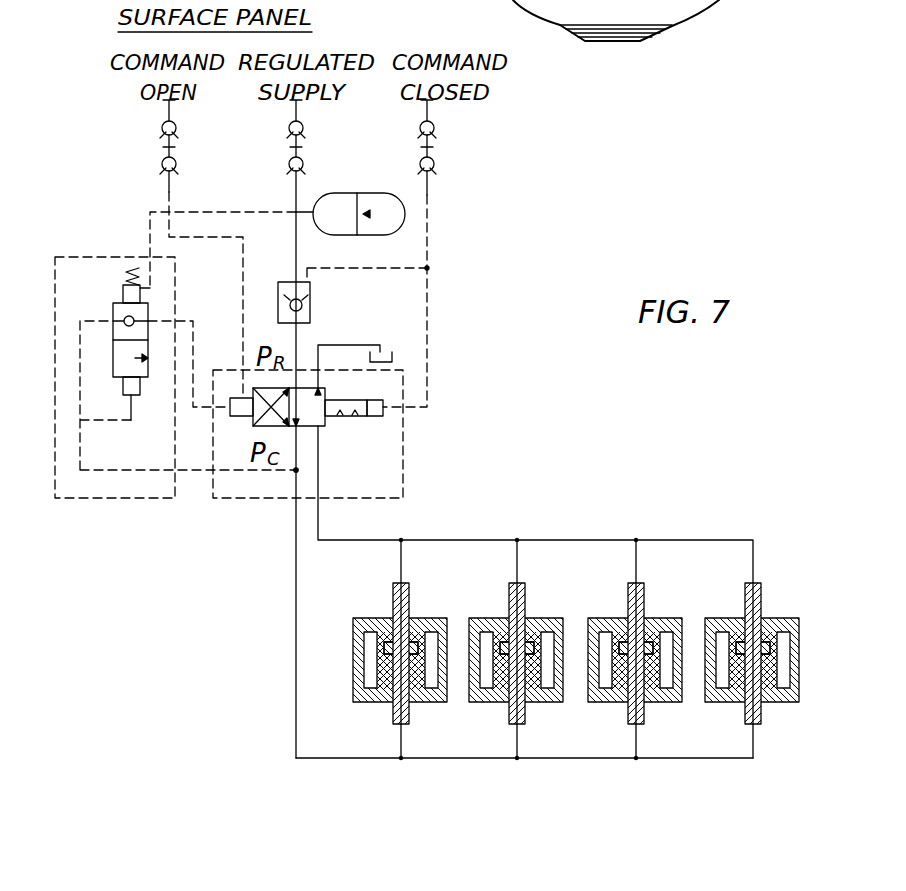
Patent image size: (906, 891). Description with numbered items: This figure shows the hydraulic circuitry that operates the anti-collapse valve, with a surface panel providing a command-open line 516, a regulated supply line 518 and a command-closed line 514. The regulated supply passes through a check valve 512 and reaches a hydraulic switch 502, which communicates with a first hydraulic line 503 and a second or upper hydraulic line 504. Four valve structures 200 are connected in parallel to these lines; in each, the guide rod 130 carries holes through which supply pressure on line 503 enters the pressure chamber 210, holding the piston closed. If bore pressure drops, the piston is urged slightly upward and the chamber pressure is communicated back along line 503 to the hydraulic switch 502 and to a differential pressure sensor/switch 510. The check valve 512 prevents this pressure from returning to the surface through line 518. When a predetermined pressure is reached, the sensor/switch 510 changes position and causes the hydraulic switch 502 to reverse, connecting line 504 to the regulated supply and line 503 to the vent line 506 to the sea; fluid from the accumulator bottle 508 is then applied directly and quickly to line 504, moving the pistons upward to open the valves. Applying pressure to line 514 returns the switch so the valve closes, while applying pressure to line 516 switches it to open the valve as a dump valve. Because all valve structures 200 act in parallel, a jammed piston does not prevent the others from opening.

The guide rod 130 is at (414, 597).
The valve structure 200 is at (551, 653).
The pressure chamber 210 is at (377, 701).
The hydraulic switch 502 is at (393, 457).
The first hydraulic line 503 is at (342, 762).
The second hydraulic line 504 is at (356, 540).
The vent line 506 is at (363, 343).
The accumulator bottle 508 is at (367, 192).
The differential pressure sensor/switch 510 is at (116, 499).
The check valve 512 is at (312, 298).
The command closed line 514 is at (429, 198).
The command open line 516 is at (167, 193).
The regulated supply line 518 is at (294, 186).